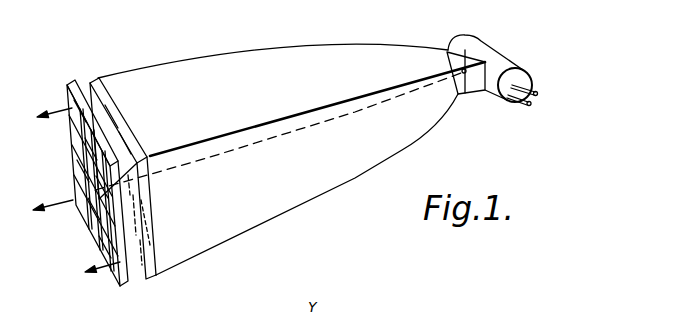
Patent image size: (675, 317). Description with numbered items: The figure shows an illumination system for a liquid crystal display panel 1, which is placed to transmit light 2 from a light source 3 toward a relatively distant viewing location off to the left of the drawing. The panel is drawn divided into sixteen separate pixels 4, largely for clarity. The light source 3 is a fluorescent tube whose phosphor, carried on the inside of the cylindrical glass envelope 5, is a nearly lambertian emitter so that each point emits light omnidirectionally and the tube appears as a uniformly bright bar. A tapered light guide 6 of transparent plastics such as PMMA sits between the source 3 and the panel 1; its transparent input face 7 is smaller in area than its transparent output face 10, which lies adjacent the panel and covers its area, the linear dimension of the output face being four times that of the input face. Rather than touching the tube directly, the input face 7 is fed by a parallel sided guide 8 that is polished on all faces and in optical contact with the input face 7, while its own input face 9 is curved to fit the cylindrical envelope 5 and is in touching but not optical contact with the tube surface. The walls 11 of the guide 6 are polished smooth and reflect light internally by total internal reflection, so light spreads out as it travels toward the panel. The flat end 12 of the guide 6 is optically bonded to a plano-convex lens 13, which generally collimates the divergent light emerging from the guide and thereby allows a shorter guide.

The liquid crystal display panel 1 is at (75, 83).
The light 2 is at (60, 110).
The light source 3 is at (533, 32).
The pixels 4 is at (103, 247).
The glass envelope 5 is at (527, 72).
The light guide 6 is at (268, 42).
The input face 7 is at (452, 98).
The parallel sided guide 8 is at (479, 92).
The input face of parallel sided guide 9 is at (503, 97).
The output face 10 is at (152, 252).
The walls 11 is at (187, 72).
The end 12 is at (156, 248).
The plano-convex lens 13 is at (110, 93).